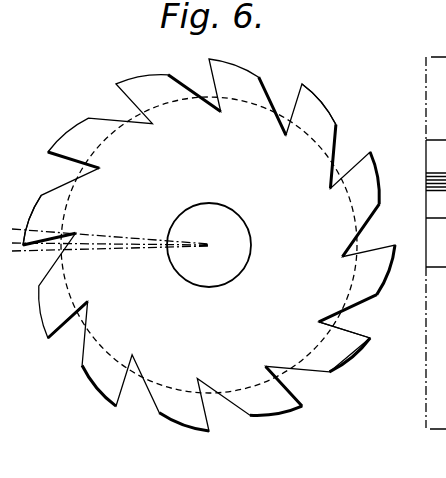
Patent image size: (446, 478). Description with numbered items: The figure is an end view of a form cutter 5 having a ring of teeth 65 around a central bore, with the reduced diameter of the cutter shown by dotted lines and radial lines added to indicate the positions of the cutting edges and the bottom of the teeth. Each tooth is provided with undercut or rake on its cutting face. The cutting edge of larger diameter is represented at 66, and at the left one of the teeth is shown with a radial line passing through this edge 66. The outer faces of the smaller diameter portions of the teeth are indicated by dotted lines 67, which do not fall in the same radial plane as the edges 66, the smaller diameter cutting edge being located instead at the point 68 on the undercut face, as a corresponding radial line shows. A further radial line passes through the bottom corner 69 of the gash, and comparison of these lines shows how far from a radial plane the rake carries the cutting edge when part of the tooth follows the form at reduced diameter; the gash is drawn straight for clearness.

The cutter 5 is at (209, 245).
The teeth 65 is at (43, 212).
The cutting edge of larger diameter 66 is at (371, 337).
The dotted lines 67 is at (226, 392).
The point on the undercut face 68 is at (340, 331).
The bottom corner of the gash 69 is at (125, 220).